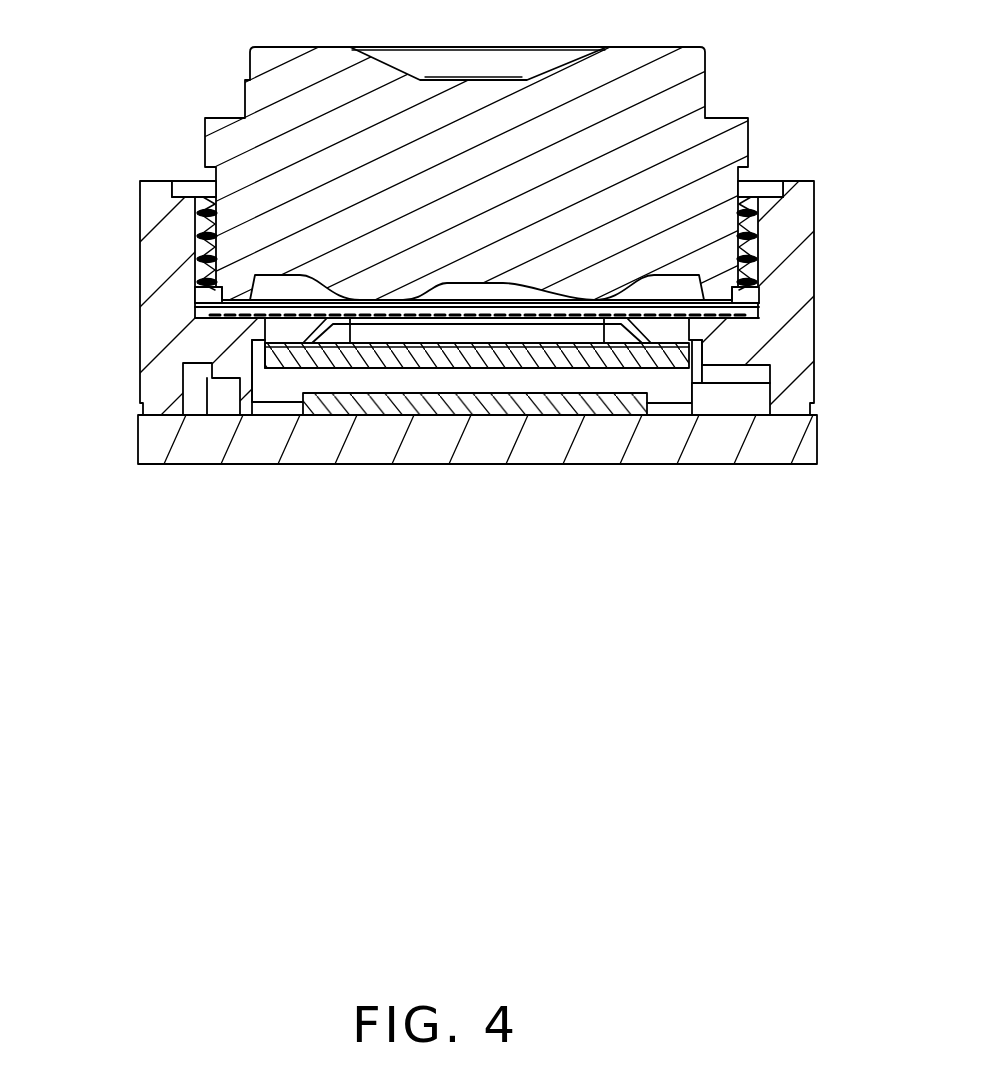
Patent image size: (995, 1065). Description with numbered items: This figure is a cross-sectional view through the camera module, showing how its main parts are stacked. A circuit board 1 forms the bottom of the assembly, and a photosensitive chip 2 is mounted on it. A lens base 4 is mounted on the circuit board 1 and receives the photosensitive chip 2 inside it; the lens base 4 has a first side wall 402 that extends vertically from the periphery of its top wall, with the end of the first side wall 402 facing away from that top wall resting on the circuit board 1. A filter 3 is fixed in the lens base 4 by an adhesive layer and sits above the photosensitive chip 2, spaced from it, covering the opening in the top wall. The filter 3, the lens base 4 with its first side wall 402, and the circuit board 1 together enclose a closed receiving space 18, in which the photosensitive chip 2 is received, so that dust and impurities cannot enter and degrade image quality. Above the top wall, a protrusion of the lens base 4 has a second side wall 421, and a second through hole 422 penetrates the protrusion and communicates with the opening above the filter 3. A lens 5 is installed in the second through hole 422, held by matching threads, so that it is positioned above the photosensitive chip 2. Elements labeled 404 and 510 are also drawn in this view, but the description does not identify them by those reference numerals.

The circuit board 1 is at (792, 448).
The photosensitive chip 2 is at (620, 392).
The filter 3 is at (637, 357).
The lens base 4 is at (793, 228).
The lens 5 is at (685, 95).
The receiving space 18 is at (402, 382).
The first side wall 402 is at (165, 347).
The conductive pad 404 is at (225, 373).
The second side wall 421 is at (180, 220).
The second through hole 422 is at (195, 185).
The lens 510 is at (228, 275).